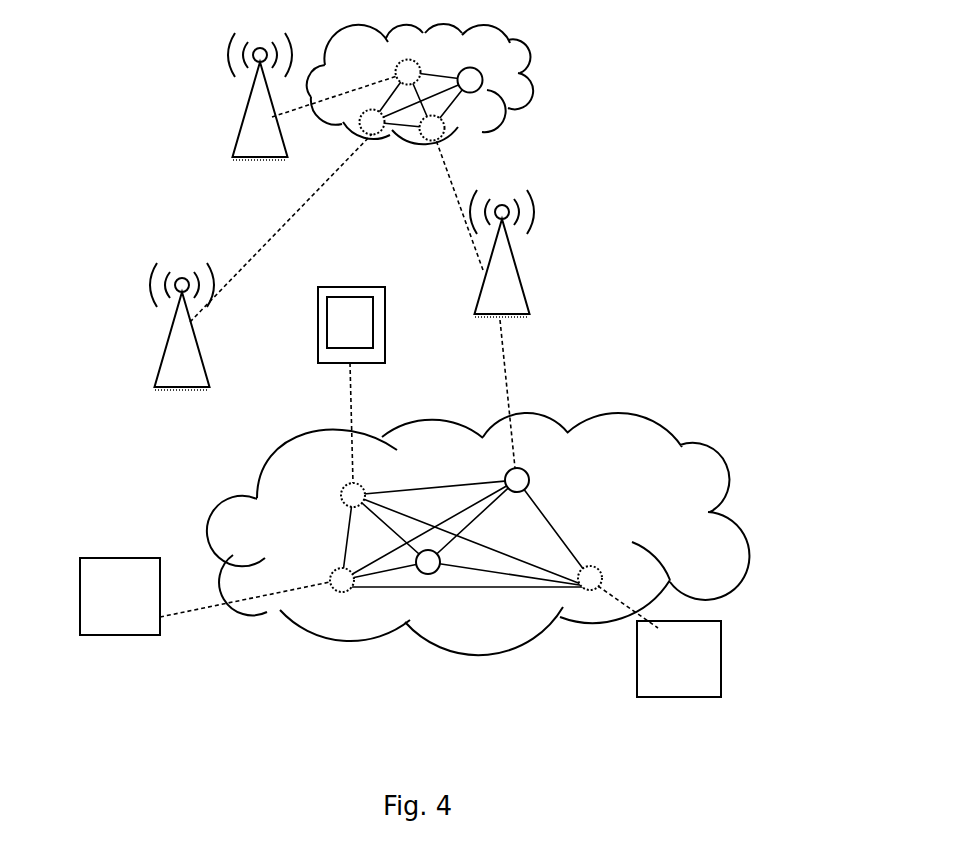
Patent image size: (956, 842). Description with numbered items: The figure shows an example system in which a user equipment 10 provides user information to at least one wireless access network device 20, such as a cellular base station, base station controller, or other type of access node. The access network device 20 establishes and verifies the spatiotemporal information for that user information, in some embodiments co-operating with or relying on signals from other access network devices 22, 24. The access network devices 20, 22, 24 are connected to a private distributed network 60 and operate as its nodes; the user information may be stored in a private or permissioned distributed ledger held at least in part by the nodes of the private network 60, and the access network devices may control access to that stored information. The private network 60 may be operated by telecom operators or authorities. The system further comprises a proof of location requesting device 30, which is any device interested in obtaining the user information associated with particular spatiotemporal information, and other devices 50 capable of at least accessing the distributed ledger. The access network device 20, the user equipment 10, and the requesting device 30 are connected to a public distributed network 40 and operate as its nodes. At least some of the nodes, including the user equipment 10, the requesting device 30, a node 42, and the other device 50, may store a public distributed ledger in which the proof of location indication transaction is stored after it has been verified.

The user equipment 10 is at (377, 333).
The wireless access network device 20 is at (495, 288).
The access network device 22 is at (185, 380).
The access network device 24 is at (253, 115).
The proof of location requesting device 30 is at (118, 617).
The public distributed network 40 is at (478, 567).
The node 42 is at (428, 574).
The other device 50 is at (700, 662).
The private distributed network 60 is at (486, 118).